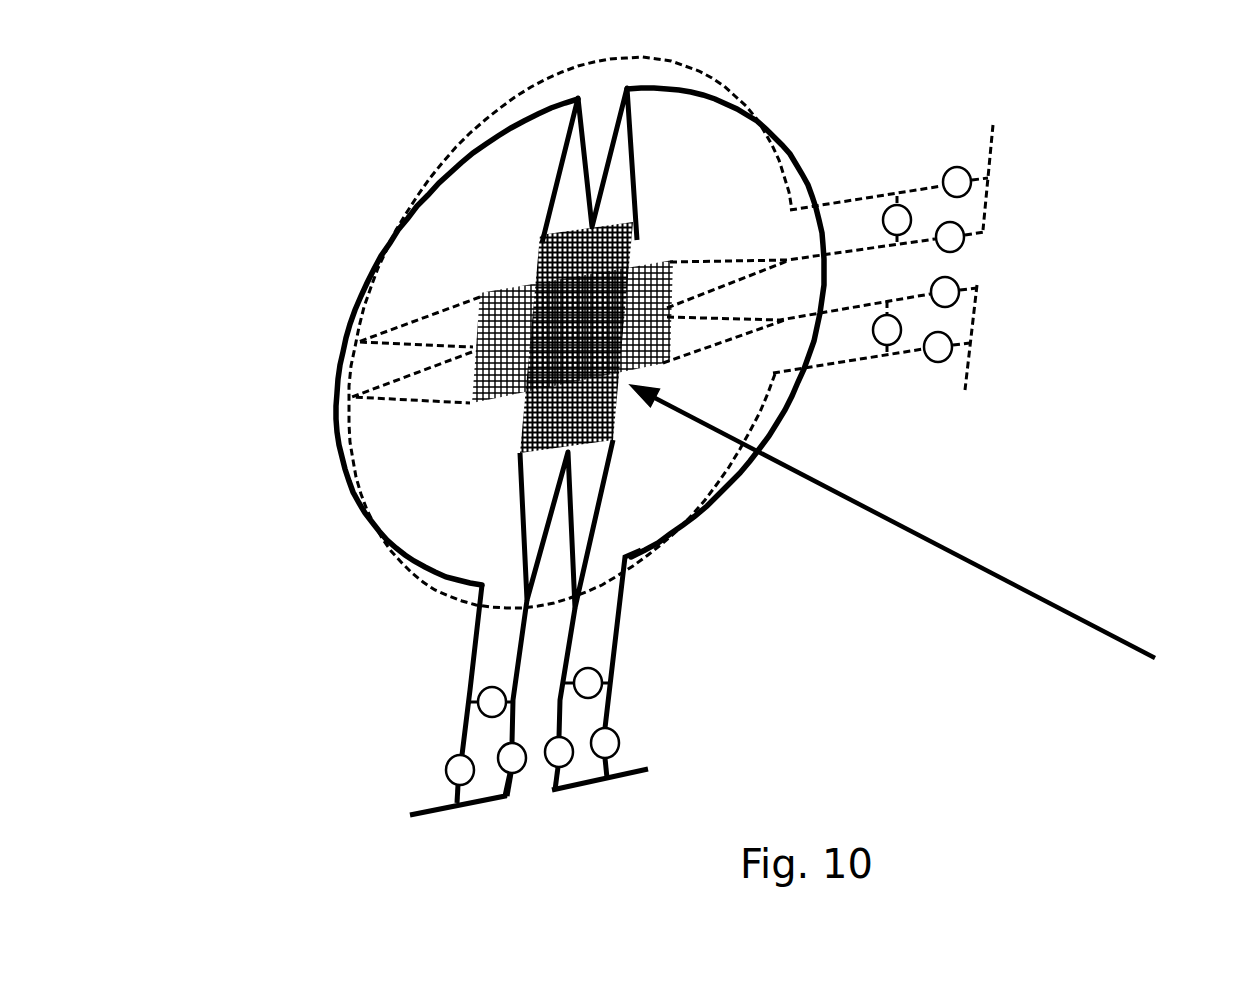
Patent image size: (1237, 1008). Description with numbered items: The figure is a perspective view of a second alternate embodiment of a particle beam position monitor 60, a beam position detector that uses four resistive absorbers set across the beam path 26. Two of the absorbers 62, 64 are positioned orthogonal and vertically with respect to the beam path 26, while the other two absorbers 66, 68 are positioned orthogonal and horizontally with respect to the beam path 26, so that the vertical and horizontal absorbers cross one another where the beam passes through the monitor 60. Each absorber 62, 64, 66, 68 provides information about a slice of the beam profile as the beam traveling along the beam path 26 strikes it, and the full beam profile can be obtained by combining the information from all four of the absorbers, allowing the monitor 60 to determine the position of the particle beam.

The particle beam position monitor 60 is at (325, 188).
The absorber 62 is at (522, 432).
The absorber 64 is at (612, 430).
The absorber 66 is at (493, 293).
The absorber 68 is at (475, 390).
The beam path 26 is at (889, 515).